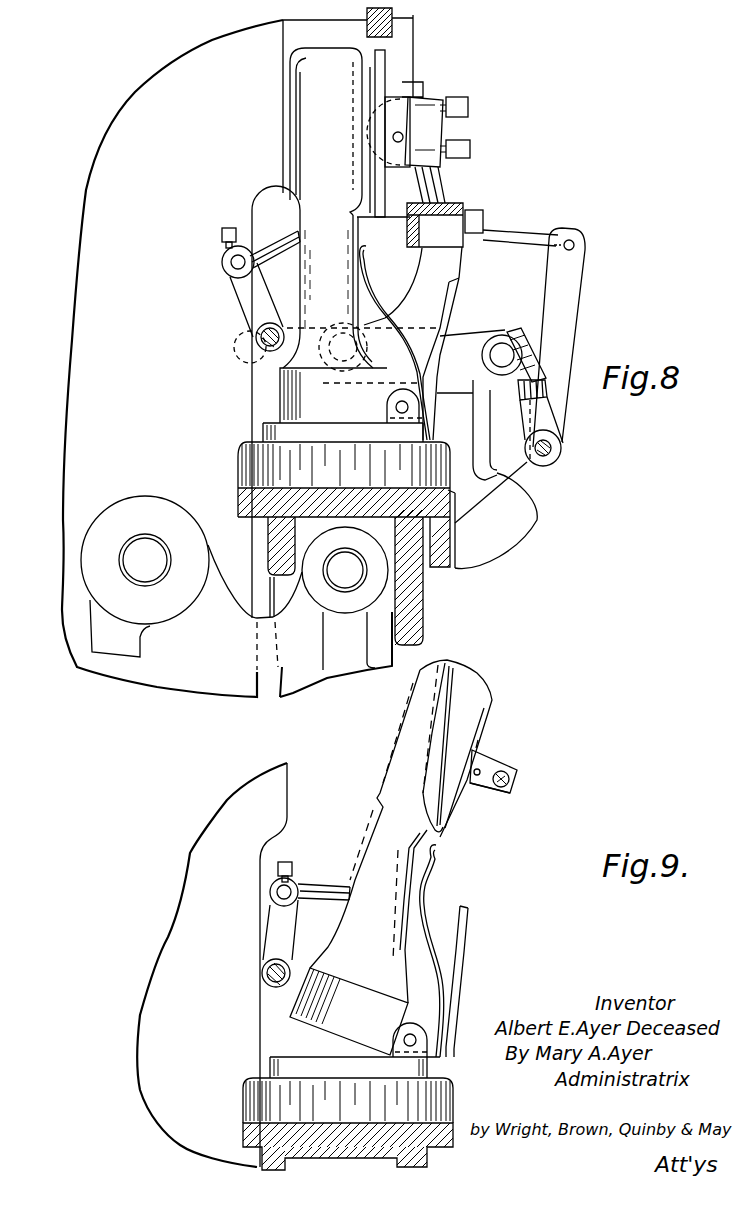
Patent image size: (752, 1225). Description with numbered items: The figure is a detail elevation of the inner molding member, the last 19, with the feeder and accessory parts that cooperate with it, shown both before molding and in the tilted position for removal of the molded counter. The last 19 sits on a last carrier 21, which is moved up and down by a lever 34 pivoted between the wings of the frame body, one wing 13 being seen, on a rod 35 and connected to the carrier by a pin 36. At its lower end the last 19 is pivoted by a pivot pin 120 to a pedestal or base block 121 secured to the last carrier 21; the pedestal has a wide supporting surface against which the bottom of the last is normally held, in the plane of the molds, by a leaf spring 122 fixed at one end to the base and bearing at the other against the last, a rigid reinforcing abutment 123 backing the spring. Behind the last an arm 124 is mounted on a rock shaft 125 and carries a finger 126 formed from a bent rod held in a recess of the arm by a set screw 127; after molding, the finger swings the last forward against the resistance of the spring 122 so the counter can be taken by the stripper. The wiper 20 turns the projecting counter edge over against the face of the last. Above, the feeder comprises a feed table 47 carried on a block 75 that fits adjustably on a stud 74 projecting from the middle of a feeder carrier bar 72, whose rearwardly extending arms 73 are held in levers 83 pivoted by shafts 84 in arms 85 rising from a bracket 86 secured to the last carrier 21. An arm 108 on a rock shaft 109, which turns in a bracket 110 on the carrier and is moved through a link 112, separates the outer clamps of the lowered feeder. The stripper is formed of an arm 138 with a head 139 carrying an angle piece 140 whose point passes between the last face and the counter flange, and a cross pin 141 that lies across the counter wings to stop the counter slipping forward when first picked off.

In FIG. 8, the wing 13 is at (84, 405).
In FIG. 9, the wing 13 is at (155, 986).
In FIG. 8, the inner member (last) 19 is at (305, 104).
In FIG. 9, the inner member (last) 19 is at (403, 747).
In FIG. 8, the pressure or wiper 20 is at (392, 22).
In FIG. 8, the last carrier 21 is at (432, 533).
In FIG. 9, the last carrier 21 is at (262, 1135).
In FIG. 8, the lever 34 is at (242, 667).
In FIG. 8, the rod 35 is at (150, 554).
In FIG. 8, the pin 36 is at (353, 572).
In FIG. 8, the feed table 47 is at (380, 83).
In FIG. 8, the feeder carrier bar 72 is at (452, 207).
In FIG. 8, the arm 73 is at (458, 260).
In FIG. 8, the stud 74 is at (440, 185).
In FIG. 8, the block 75 is at (445, 128).
In FIG. 8, the lever 83 is at (450, 337).
In FIG. 8, the shaft or rod 84 is at (510, 352).
In FIG. 8, the arm 85 is at (510, 420).
In FIG. 8, the bracket 86 is at (507, 527).
In FIG. 8, the arm 108 is at (505, 358).
In FIG. 8, the rock shaft 109 is at (555, 451).
In FIG. 8, the bracket 110 is at (518, 472).
In FIG. 8, the link 112 is at (520, 235).
In FIG. 8, the pivot pin 120 is at (406, 408).
In FIG. 9, the pivot pin 120 is at (412, 1039).
In FIG. 8, the pedestal or base block 121 is at (297, 458).
In FIG. 9, the pedestal or base block 121 is at (292, 1098).
In FIG. 8, the spring 122 is at (365, 295).
In FIG. 9, the spring 122 is at (425, 903).
In FIG. 8, the reinforcing abutment 123 is at (450, 298).
In FIG. 9, the reinforcing abutment 123 is at (462, 918).
In FIG. 8, the arm 124 is at (245, 293).
In FIG. 9, the arm 124 is at (280, 926).
In FIG. 8, the rock shaft 125 is at (255, 344).
In FIG. 9, the rock shaft 125 is at (268, 976).
In FIG. 8, the finger 126 is at (282, 240).
In FIG. 9, the finger 126 is at (323, 892).
In FIG. 8, the set screw 127 is at (222, 237).
In FIG. 9, the set screw 127 is at (290, 860).
In FIG. 9, the arm 138 is at (510, 782).
In FIG. 9, the head 139 is at (488, 785).
In FIG. 9, the angle piece 140 is at (478, 744).
In FIG. 9, the cross pin 141 is at (481, 771).